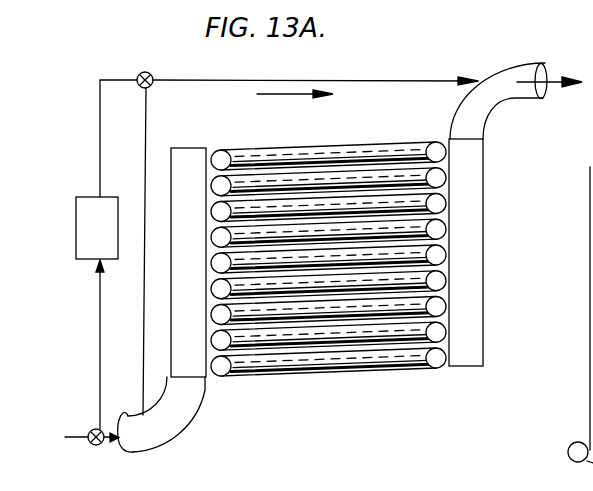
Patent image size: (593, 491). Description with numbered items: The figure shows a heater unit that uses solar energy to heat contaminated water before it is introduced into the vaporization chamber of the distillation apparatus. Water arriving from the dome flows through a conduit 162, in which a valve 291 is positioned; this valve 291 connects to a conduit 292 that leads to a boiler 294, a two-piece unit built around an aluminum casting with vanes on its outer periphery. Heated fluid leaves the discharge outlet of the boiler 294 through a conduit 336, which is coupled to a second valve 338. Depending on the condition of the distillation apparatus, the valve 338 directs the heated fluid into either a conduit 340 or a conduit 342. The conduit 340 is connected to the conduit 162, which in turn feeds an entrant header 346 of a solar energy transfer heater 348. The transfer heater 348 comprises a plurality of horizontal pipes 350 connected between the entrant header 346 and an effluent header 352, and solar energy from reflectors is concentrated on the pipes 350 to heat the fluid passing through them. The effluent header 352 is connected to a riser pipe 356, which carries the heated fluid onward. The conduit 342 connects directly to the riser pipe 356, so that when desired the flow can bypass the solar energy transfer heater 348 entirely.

The conduit 162 is at (137, 443).
The valve 291 is at (100, 447).
The conduit 292 is at (100, 357).
The boiler 294 is at (112, 237).
The conduit 336 is at (100, 100).
The valve 338 is at (158, 45).
The conduit 340 is at (145, 170).
The conduit 342 is at (186, 81).
The entrant header 346 is at (193, 165).
The solar energy transfer heater 348 is at (372, 386).
The horizontal pipes 350 is at (355, 152).
The effluent header 352 is at (467, 212).
The riser pipe 356 is at (502, 80).